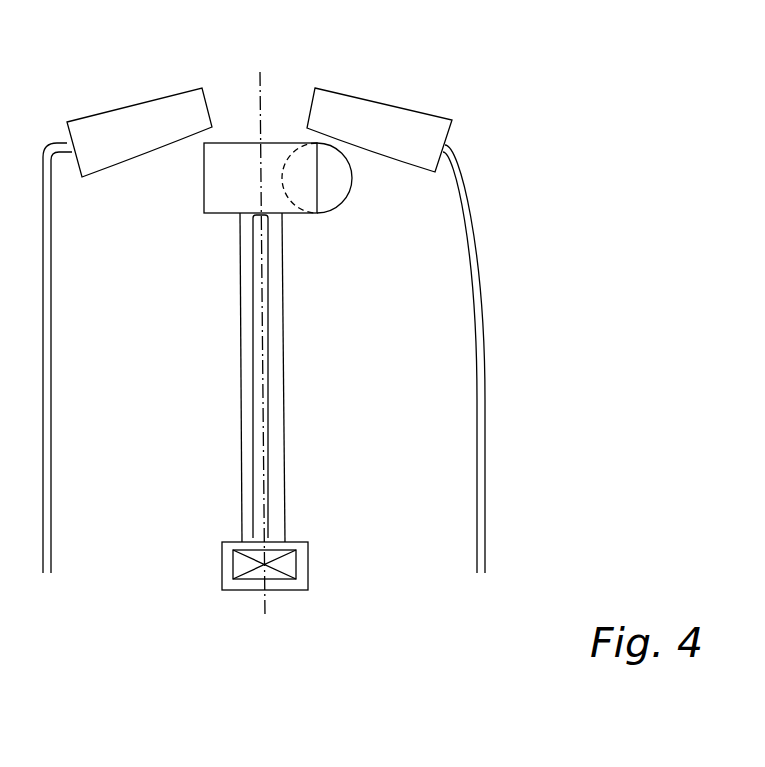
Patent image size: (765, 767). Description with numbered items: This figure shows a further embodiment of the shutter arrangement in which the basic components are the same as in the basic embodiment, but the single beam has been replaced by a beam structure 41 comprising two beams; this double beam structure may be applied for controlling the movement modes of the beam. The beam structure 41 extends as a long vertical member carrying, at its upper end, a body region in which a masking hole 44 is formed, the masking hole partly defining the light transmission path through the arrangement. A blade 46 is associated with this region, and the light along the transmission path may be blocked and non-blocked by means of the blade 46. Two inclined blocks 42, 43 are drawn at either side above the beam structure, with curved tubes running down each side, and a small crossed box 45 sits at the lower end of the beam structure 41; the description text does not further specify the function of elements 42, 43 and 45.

The beam structure 41 is at (222, 342).
The left magnet block 42 is at (127, 110).
The right magnet block 43 is at (387, 98).
The masking hole 44 is at (350, 183).
The transducer element 45 is at (308, 562).
The blade 46 is at (242, 142).